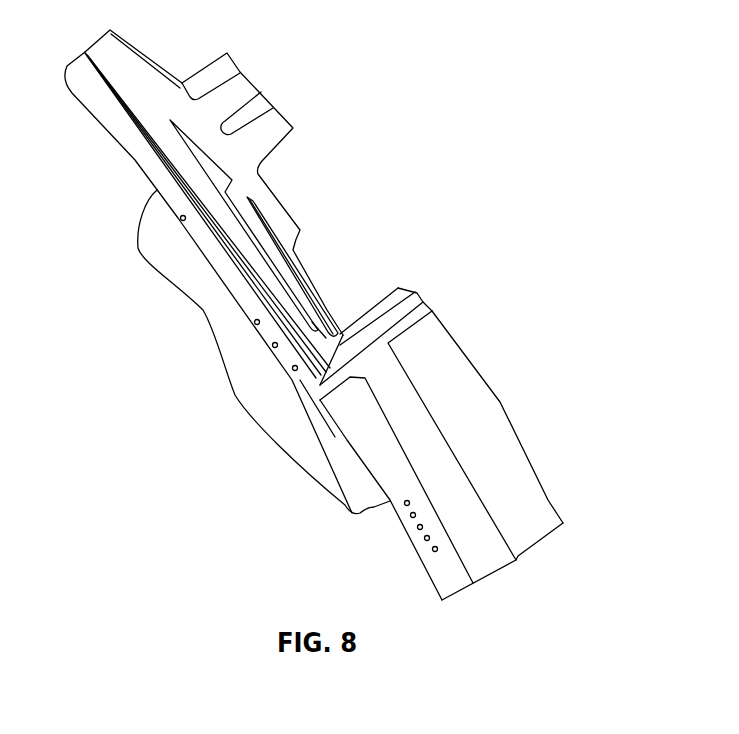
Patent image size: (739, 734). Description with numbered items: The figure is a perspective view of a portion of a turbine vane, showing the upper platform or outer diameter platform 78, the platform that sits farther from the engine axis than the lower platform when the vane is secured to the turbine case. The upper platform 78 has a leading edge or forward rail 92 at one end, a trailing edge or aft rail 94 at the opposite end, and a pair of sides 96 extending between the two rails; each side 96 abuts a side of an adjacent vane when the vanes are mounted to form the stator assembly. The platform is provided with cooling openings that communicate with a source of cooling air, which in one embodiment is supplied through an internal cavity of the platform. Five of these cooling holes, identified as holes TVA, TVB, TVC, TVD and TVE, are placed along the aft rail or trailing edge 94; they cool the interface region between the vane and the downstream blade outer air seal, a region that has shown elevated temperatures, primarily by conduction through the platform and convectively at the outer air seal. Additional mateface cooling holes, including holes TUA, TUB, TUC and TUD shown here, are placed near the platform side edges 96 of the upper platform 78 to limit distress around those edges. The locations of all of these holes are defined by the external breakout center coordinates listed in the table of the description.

The upper platform or outer diameter platform 78 is at (433, 212).
The leading edge or forward rail 92 is at (97, 45).
The trailing edge or aft rail 94 is at (383, 447).
The sides 96 is at (215, 210).
The mateface cooling hole TUA is at (292, 370).
The mateface cooling hole TUB is at (318, 305).
The mateface cooling hole TUC is at (254, 323).
The mateface cooling hole TUD is at (180, 218).
The aft rail cooling hole TVA is at (410, 503).
The aft rail cooling hole TVB is at (416, 515).
The aft rail cooling hole TVC is at (417, 528).
The aft rail cooling hole TVD is at (430, 538).
The aft rail cooling hole TVE is at (438, 551).